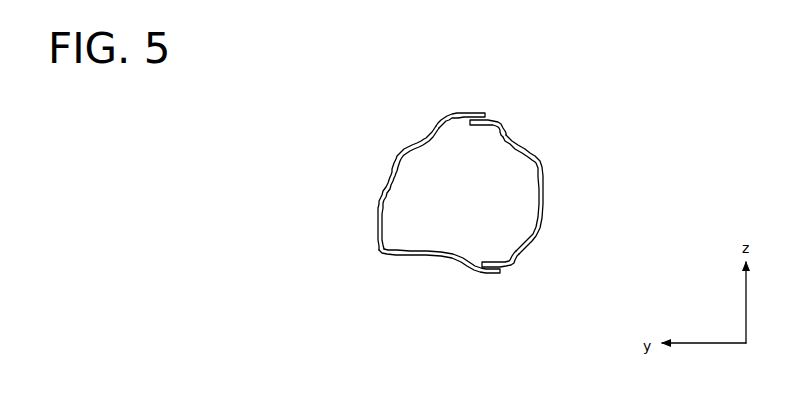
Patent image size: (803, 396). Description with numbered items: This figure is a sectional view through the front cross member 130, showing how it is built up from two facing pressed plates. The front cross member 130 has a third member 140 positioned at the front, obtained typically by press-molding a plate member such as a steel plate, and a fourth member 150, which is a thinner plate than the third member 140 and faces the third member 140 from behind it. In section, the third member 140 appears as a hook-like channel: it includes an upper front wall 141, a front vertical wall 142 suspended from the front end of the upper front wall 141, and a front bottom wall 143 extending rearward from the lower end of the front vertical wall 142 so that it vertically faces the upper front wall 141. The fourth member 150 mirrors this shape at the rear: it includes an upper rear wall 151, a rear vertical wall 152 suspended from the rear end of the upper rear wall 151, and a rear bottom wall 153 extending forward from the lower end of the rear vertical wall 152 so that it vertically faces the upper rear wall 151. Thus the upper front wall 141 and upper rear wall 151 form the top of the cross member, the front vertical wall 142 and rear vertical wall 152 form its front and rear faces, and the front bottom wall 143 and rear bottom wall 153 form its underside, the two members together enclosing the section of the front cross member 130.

The front cross member 130 is at (465, 190).
The third member 140 is at (403, 183).
The upper front wall 141 is at (455, 112).
The front vertical wall 142 is at (378, 205).
The front bottom wall 143 is at (453, 256).
The fourth member 150 is at (546, 197).
The upper rear wall 151 is at (487, 118).
The rear vertical wall 152 is at (545, 220).
The rear bottom wall 153 is at (502, 268).